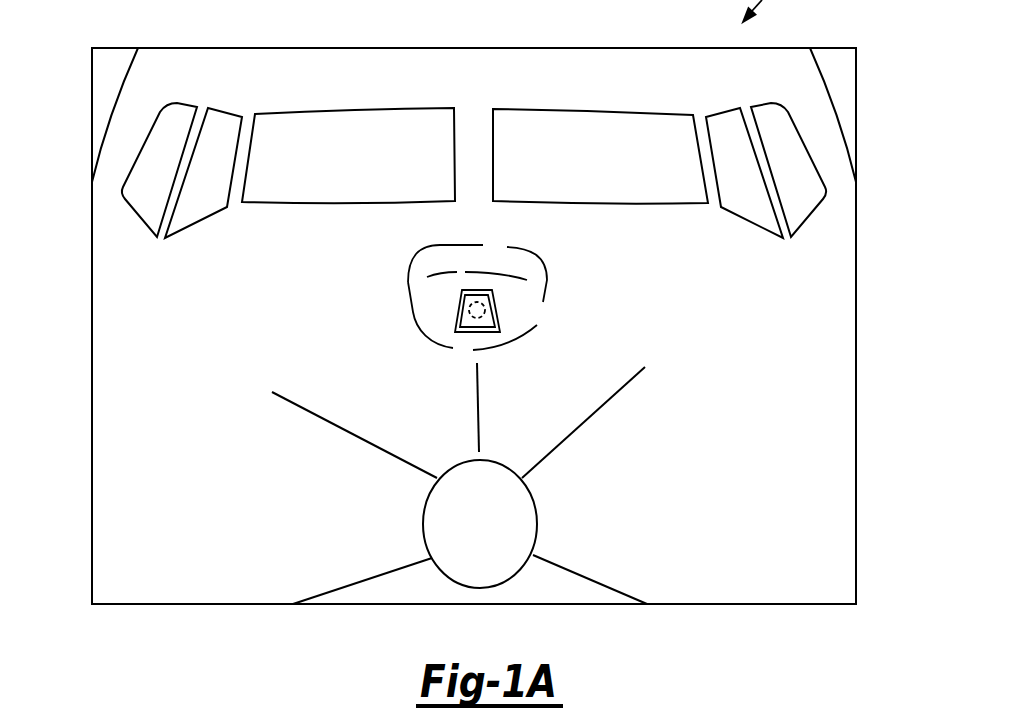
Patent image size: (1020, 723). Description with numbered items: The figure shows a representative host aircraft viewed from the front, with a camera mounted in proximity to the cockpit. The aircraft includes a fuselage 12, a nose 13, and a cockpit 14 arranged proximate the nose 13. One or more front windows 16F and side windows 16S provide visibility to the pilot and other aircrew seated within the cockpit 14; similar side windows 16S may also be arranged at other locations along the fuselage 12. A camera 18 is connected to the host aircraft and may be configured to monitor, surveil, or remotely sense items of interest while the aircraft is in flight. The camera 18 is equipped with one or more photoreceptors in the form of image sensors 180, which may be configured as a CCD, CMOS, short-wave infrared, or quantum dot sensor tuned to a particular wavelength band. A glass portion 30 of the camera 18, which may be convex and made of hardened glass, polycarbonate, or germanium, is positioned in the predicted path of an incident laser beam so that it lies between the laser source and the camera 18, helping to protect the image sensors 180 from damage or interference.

The fuselage 12 is at (832, 406).
The nose 13 is at (491, 536).
The cockpit 14 is at (244, 270).
The front windows 16F is at (367, 165).
The side windows 16S is at (197, 187).
The camera 18 is at (592, 288).
The glass portion 30 is at (465, 327).
The image sensor 180 is at (463, 310).